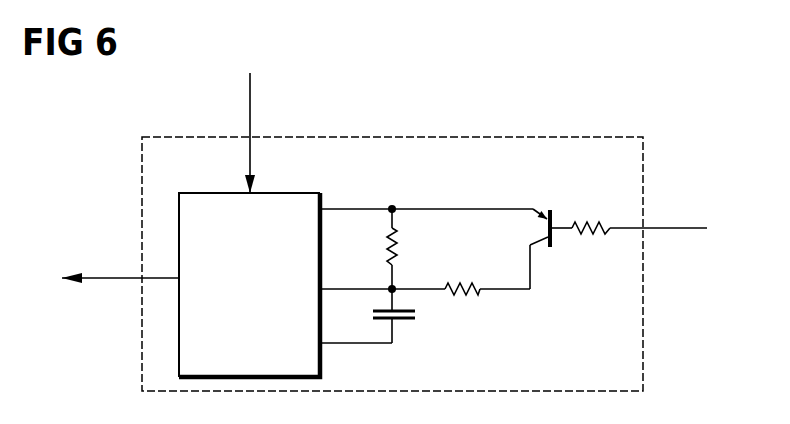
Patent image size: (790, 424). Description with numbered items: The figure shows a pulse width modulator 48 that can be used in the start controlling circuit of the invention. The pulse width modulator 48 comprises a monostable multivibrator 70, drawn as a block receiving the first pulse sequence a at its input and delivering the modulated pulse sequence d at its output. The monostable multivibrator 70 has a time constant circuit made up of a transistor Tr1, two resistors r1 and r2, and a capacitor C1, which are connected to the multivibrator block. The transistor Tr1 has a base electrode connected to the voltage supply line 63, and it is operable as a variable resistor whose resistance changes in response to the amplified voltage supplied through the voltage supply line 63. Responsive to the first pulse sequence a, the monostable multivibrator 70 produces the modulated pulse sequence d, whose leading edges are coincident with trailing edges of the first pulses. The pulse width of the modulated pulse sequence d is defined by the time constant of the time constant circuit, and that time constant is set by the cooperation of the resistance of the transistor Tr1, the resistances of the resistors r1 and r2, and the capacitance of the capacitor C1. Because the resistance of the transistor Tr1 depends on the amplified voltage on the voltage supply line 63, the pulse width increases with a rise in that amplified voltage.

The pulse width modulator 48 is at (597, 136).
The monostable multivibrator 70 is at (299, 192).
The voltage supply line 63 is at (665, 228).
The transistor Tr1 is at (540, 248).
The resistor r1 is at (402, 249).
The resistor r2 is at (462, 276).
The capacitor C1 is at (405, 316).
The first pulse sequence a is at (251, 95).
The modulated pulse sequence d is at (113, 277).